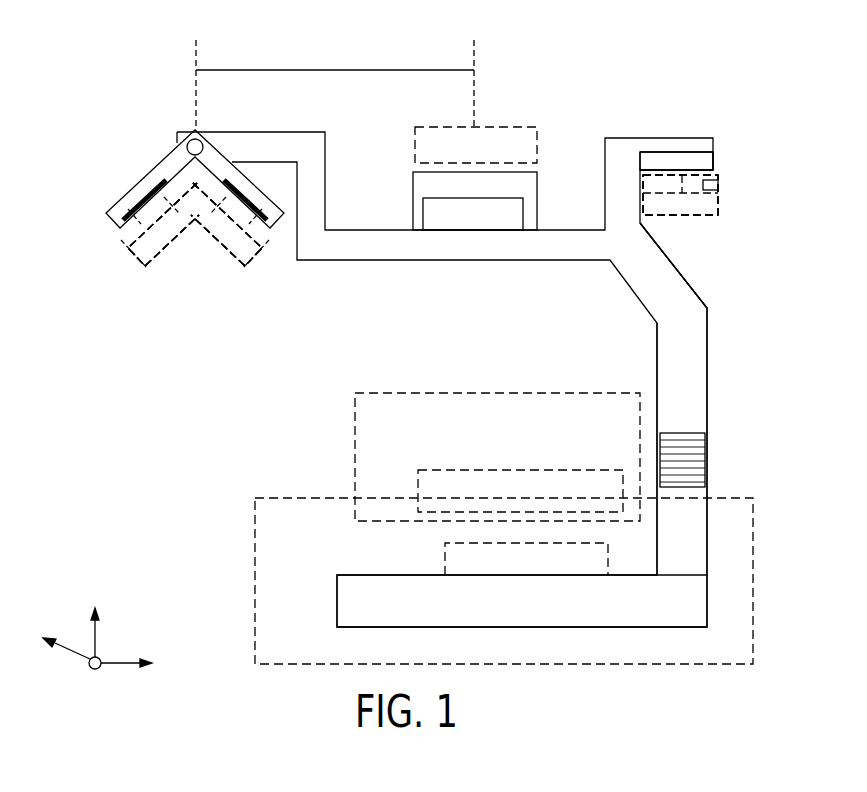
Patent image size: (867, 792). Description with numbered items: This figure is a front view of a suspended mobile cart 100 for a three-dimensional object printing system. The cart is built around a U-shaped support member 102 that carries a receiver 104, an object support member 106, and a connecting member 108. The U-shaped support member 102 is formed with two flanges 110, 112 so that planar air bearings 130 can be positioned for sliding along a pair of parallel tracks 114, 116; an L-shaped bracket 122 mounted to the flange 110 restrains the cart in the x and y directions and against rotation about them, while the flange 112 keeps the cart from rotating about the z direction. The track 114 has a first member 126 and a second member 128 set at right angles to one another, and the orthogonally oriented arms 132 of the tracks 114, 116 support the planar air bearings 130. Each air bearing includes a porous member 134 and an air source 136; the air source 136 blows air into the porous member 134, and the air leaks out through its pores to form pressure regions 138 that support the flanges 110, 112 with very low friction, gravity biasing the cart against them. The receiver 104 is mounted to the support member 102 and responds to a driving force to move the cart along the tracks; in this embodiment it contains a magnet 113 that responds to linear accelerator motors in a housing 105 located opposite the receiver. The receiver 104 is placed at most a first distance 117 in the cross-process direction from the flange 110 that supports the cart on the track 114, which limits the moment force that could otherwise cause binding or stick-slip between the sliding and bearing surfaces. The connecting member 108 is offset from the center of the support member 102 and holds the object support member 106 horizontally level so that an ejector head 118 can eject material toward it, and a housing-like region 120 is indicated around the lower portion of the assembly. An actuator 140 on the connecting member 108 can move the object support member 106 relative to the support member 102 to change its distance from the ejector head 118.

The mobile cart 100 is at (192, 533).
The U-shaped support member 102 is at (507, 262).
The receiver 104 is at (538, 182).
The housing 105 is at (413, 137).
The object support member 106 is at (340, 575).
The connecting member 108 is at (708, 373).
The flange 110 is at (177, 136).
The flange 112 is at (703, 160).
The magnet 113 is at (525, 222).
The track 114 is at (197, 254).
The track 116 is at (693, 275).
The first distance 117 is at (375, 70).
The ejector head 118 is at (395, 392).
The housing 120 is at (315, 497).
The L-shaped bracket 122 is at (110, 208).
The first member 126 is at (147, 270).
The second member 128 is at (247, 263).
The planar air bearing 130 is at (121, 223).
The orthogonally oriented arms 132 is at (707, 203).
The porous member 134 is at (423, 220).
The air source 136 is at (124, 255).
The pressure regions 138 is at (240, 193).
The actuator 140 is at (692, 465).